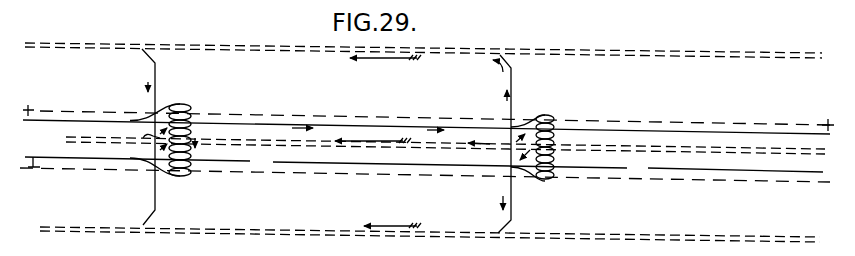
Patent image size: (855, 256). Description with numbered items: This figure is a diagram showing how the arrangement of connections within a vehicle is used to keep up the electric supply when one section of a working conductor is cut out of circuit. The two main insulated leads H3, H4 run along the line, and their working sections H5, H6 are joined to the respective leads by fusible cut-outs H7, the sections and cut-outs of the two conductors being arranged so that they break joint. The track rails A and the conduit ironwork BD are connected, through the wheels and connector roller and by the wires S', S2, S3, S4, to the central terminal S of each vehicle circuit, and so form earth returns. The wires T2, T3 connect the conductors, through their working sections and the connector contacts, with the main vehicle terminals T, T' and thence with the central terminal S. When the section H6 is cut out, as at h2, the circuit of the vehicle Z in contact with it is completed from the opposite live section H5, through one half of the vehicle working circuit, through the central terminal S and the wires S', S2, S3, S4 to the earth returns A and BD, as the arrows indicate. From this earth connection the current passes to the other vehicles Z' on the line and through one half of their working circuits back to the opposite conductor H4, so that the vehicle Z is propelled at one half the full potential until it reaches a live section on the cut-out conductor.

The track rails A is at (197, 47).
The conduit ironwork BD is at (433, 145).
The main insulated lead H3 is at (73, 111).
The main insulated lead H4 is at (46, 170).
The working section H5 is at (458, 129).
The working section H6 is at (309, 171).
The fusible cut-out H7 is at (250, 121).
The cut-out point h2 is at (416, 164).
The other vehicle Z' is at (162, 124).
The vehicle Z is at (532, 137).
The central terminal S is at (577, 122).
The earth-return wire S' is at (562, 161).
The earth-return wire S2 is at (511, 97).
The earth-return wire S3 is at (502, 58).
The earth-return wire S4 is at (510, 145).
The main terminal T is at (558, 111).
The main terminal T' is at (559, 188).
The connecting wire T2 is at (511, 127).
The connecting wire T3 is at (523, 177).